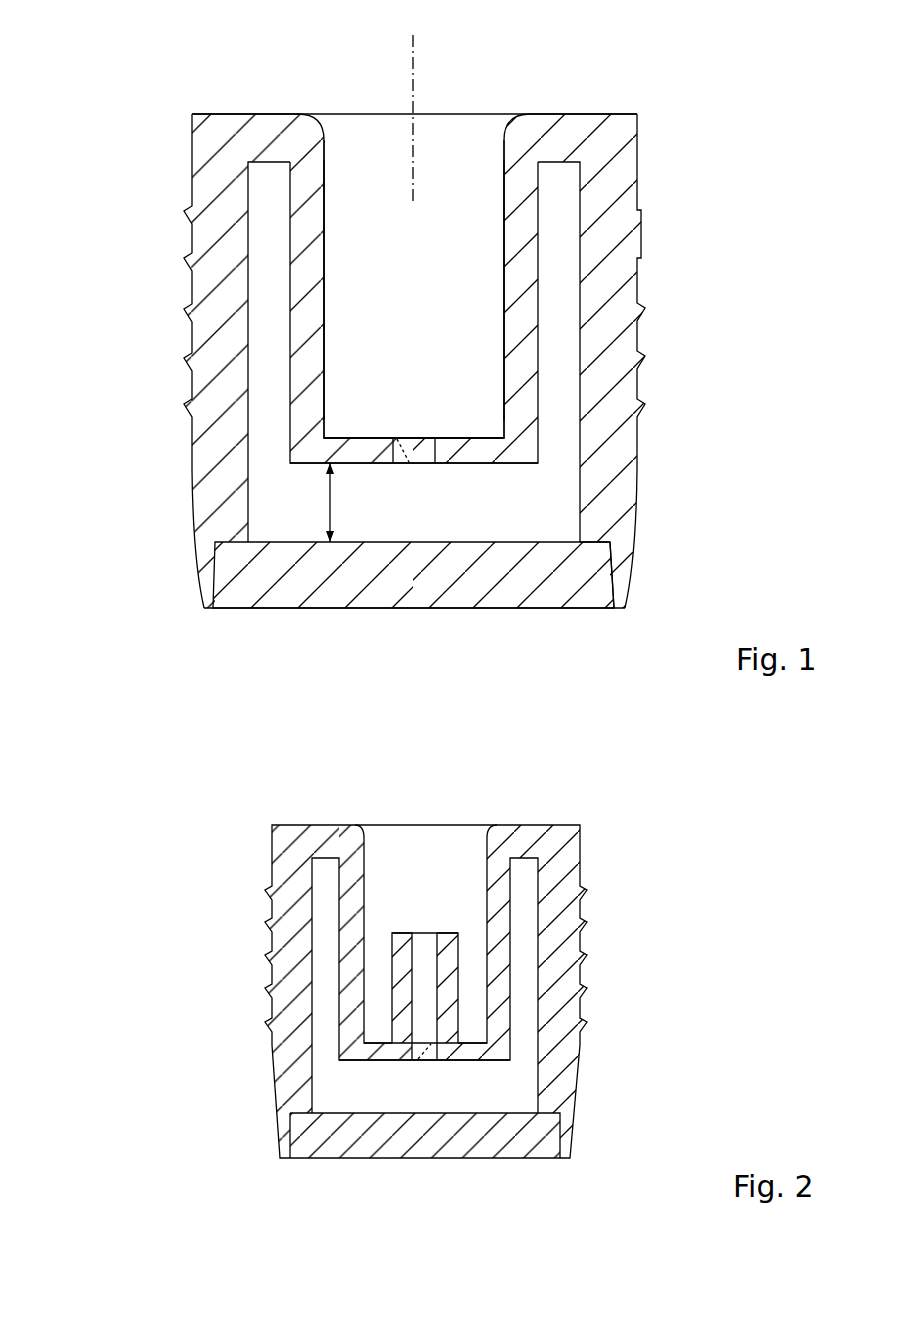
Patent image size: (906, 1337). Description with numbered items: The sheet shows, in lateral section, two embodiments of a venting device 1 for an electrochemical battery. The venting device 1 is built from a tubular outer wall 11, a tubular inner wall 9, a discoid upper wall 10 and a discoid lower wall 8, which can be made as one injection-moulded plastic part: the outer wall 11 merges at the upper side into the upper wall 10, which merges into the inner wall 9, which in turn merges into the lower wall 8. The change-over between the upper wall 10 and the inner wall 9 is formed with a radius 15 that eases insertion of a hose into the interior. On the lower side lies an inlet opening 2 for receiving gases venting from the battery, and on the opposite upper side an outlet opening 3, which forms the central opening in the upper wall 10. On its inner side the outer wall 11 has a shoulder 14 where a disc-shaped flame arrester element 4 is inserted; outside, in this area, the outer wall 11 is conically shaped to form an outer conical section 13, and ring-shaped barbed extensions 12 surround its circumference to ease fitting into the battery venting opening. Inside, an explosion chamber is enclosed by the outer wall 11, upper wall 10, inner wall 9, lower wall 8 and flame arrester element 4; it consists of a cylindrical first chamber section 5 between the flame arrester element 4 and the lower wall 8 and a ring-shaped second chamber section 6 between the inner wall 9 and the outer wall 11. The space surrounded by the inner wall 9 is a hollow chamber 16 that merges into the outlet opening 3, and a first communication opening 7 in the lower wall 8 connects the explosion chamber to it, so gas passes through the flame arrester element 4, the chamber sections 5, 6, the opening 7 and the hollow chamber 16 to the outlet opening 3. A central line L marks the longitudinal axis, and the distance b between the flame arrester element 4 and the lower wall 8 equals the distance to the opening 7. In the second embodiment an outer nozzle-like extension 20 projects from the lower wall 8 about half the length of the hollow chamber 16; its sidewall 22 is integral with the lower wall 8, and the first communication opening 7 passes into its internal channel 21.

In FIG. 1, the venting device 1 is at (113, 193).
In FIG. 2, the venting device 1 is at (216, 851).
In FIG. 1, the inlet opening 2 is at (366, 628).
In FIG. 1, the outlet opening 3 is at (445, 132).
In FIG. 1, the flame arrester element 4 is at (512, 594).
In FIG. 1, the first chamber section 5 is at (558, 492).
In FIG. 1, the second chamber section 6 is at (558, 336).
In FIG. 1, the first communication opening 7 is at (406, 460).
In FIG. 2, the first communication opening 7 is at (428, 1062).
In FIG. 1, the discoid lower wall 8 is at (345, 438).
In FIG. 2, the discoid lower wall 8 is at (375, 1062).
In FIG. 1, the tubular inner wall 9 is at (512, 268).
In FIG. 1, the discoid upper wall 10 is at (262, 114).
In FIG. 1, the tubular outer wall 11 is at (205, 330).
In FIG. 1, the barbed extensions 12 is at (641, 258).
In FIG. 1, the outer conical section 13 is at (198, 564).
In FIG. 1, the shoulder 14 is at (628, 543).
In FIG. 1, the radius 15 is at (332, 114).
In FIG. 1, the hollow chamber 16 is at (464, 220).
In FIG. 2, the outer nozzle-like extension 20 is at (400, 933).
In FIG. 2, the internal channel 21 is at (424, 972).
In FIG. 2, the sidewall 22 is at (398, 1002).
In FIG. 1, the central line L is at (414, 43).
In FIG. 1, the distance b is at (337, 502).